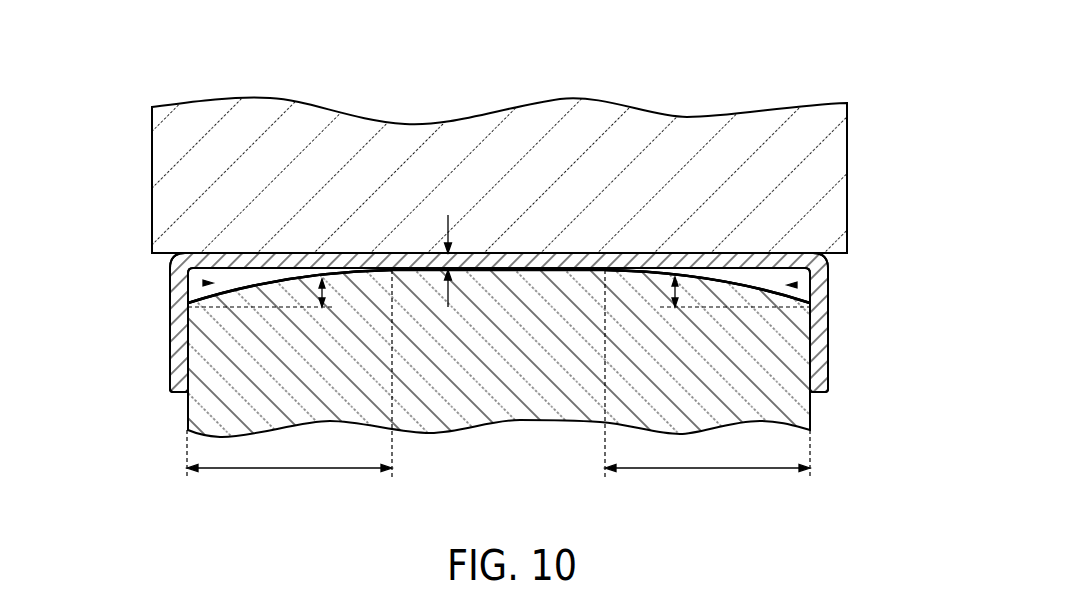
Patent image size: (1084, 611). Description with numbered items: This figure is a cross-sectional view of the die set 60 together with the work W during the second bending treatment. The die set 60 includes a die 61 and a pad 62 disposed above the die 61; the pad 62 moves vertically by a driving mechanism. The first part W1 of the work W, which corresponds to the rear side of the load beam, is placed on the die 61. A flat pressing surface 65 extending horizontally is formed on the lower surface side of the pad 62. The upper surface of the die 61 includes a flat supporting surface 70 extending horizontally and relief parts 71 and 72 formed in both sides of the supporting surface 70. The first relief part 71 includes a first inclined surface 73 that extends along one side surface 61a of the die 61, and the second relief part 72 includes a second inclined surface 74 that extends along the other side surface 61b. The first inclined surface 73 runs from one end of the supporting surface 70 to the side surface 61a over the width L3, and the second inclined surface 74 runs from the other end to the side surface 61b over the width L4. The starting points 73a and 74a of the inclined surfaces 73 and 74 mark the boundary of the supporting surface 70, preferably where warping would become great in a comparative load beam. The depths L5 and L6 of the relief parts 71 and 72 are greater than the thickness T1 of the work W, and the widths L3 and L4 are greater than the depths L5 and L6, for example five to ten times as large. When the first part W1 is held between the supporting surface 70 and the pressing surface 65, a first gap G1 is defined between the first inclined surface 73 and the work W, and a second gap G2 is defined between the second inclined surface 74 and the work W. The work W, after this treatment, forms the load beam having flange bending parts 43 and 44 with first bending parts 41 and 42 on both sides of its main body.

The die set 60 is at (386, 100).
The pad 62 is at (540, 122).
The die 61 is at (488, 412).
The one side surface of the die 61a is at (187, 363).
The other side surface of the die 61b is at (812, 363).
The pressing surface 65 is at (417, 272).
The supporting surface 70 is at (525, 262).
The first bending part 41 is at (172, 258).
The first bending part 42 is at (830, 260).
The flange bending part 43 is at (170, 342).
The flange bending part 44 is at (828, 342).
The first relief part 71 is at (204, 283).
The second relief part 72 is at (796, 285).
The first inclined surface 73 is at (238, 290).
The second inclined surface 74 is at (760, 285).
The starting point of the first inclined surface 73a is at (392, 258).
The starting point of the second inclined surface 74a is at (605, 258).
The thickness of the work T1 is at (460, 258).
The first gap G1 is at (255, 270).
The second gap G2 is at (755, 272).
The work W is at (278, 272).
The first part of the work W1 is at (708, 262).
The width of the first relief part L3 is at (287, 470).
The width of the second relief part L4 is at (710, 470).
The depth of the first relief part L5 is at (328, 288).
The depth of the second relief part L6 is at (668, 288).